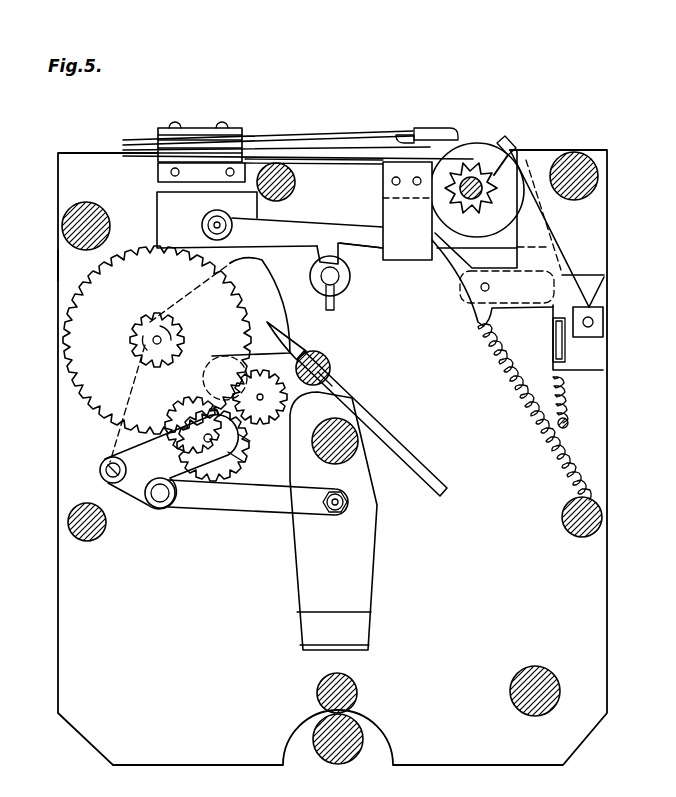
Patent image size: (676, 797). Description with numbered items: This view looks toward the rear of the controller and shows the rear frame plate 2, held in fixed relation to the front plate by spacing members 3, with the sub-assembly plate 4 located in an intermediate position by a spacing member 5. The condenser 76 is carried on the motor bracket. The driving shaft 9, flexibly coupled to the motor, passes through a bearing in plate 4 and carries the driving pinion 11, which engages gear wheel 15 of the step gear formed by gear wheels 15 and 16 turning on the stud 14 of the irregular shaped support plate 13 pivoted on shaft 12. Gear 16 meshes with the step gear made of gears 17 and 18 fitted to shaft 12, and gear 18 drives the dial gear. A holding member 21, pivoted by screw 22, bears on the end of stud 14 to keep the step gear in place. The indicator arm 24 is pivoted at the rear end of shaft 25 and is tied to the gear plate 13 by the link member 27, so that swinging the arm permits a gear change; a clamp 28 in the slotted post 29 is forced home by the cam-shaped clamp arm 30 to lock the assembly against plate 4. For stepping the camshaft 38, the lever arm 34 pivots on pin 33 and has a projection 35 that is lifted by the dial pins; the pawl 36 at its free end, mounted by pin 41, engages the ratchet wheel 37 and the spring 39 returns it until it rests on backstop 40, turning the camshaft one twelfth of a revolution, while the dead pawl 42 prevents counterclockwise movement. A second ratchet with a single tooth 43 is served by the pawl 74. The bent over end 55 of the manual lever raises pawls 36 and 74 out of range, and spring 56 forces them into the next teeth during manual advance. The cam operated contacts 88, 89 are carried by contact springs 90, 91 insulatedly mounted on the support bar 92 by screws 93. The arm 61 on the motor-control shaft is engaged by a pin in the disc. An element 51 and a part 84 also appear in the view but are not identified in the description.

The rear frame plate 2 is at (58, 176).
The spacing member 3 is at (63, 222).
The sub-assembly plate 4 is at (58, 265).
The spacing member 5 is at (69, 514).
The driving shaft 9 is at (268, 397).
The driving pinion 11 is at (246, 438).
The shaft 12 is at (152, 330).
The support plate 13 is at (268, 262).
The stud 14 is at (238, 470).
The gear wheel 15 is at (247, 457).
The gear wheel 16 is at (183, 428).
The gear 17 is at (88, 403).
The gear 18 is at (176, 338).
The holding member 21 is at (130, 452).
The screw 22 is at (100, 469).
The indicator arm 24 is at (375, 546).
The shaft 25 is at (325, 456).
The link member 27 is at (272, 515).
The clamp 28 is at (326, 391).
The slotted post 29 is at (331, 368).
The clamp arm 30 is at (389, 445).
The pin 33 is at (202, 227).
The lever arm 34 is at (288, 221).
The projection 35 is at (338, 258).
The pawl 36 is at (572, 253).
The ratchet wheel 37 is at (503, 160).
The camshaft 38 is at (473, 180).
The spring 39 is at (520, 395).
The backstop 40 is at (604, 326).
The pin 41 is at (489, 287).
The dead pawl 42 is at (293, 160).
The single tooth 43 is at (471, 197).
The roller 51 is at (558, 686).
The bent over end 55 is at (566, 346).
The spring 56 is at (567, 397).
The arm 61 is at (336, 306).
The pawl 74 is at (598, 281).
The condenser 76 is at (157, 208).
The bracket 84 is at (383, 189).
The cam operated contact 88 is at (449, 128).
The cam operated contact 89 is at (403, 135).
The contact spring 90 is at (347, 136).
The contact spring 91 is at (368, 148).
The support bar 92 is at (157, 172).
The screw 93 is at (222, 123).